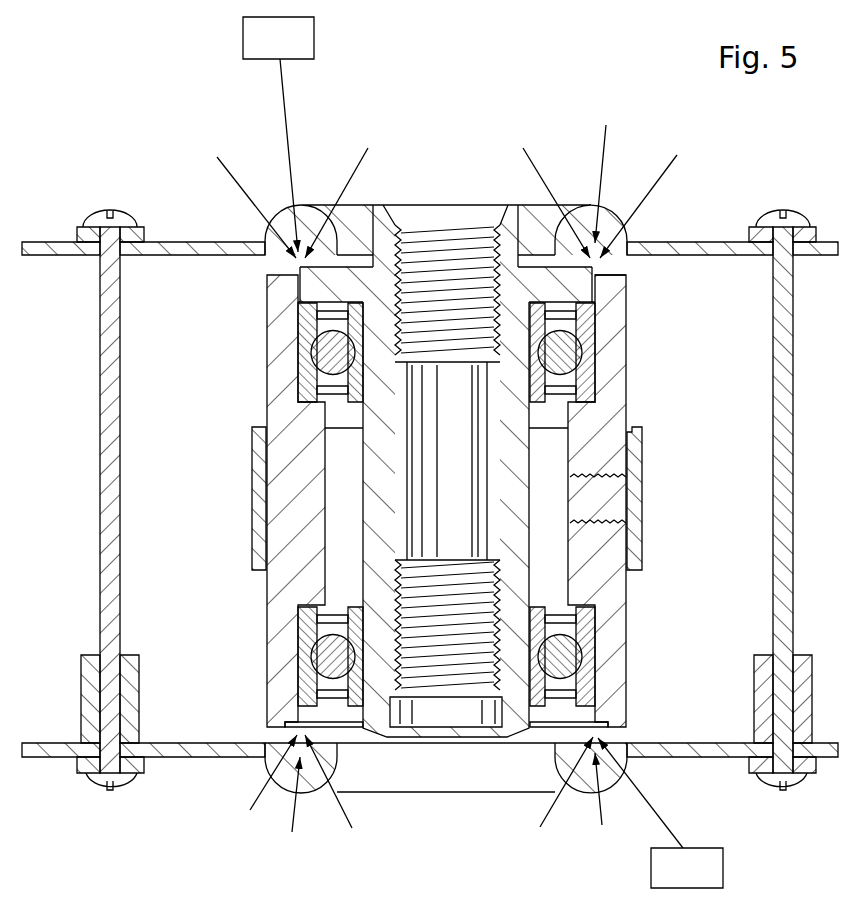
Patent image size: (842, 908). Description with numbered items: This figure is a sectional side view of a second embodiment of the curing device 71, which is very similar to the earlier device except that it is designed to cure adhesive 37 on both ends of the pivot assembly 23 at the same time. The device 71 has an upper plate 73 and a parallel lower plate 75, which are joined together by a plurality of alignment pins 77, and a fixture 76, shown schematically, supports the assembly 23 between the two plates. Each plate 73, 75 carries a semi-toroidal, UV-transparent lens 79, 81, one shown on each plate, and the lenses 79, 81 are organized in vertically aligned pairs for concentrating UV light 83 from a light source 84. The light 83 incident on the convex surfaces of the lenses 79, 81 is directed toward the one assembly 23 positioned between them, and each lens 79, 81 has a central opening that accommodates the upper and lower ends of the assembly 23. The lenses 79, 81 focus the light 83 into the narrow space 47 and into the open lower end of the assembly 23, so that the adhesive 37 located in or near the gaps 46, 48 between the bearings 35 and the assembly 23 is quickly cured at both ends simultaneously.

The assembly 23 is at (222, 291).
The bearings 35 is at (588, 338).
The adhesive 37 is at (296, 300).
The gap 46 is at (325, 427).
The narrow space 47 is at (597, 278).
The gap 48 is at (298, 337).
The device 71 is at (121, 168).
The upper plate 73 is at (214, 250).
The lower plate 75 is at (242, 744).
The fixture 76 is at (643, 525).
The alignment pins 77 is at (113, 452).
The lens 79 is at (350, 204).
The lens 81 is at (410, 793).
The UV light 83 is at (353, 173).
The light source 84 is at (307, 27).